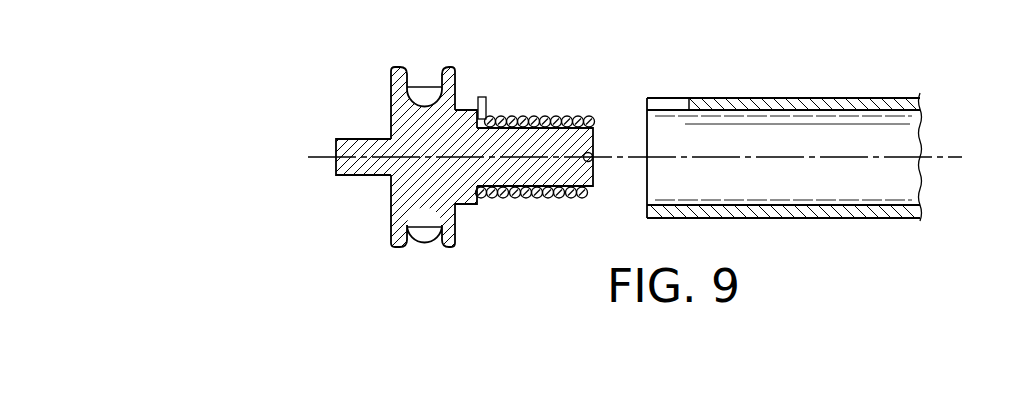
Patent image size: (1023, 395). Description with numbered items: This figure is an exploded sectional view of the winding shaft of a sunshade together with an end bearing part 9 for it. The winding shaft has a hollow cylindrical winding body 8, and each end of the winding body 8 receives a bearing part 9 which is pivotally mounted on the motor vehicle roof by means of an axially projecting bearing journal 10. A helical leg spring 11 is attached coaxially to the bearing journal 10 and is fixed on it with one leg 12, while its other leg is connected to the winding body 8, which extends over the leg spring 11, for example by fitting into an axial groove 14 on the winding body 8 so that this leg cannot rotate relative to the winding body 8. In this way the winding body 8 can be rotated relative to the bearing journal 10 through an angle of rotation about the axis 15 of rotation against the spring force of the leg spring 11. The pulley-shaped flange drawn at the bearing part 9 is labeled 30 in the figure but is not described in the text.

The winding body 8 is at (813, 100).
The bearing part 9 is at (467, 138).
The bearing journal 10 is at (353, 143).
The helical leg spring 11 is at (538, 108).
The leg 12 is at (592, 157).
The axial groove 14 is at (665, 104).
The axis of rotation 15 is at (947, 157).
The pulley 30 is at (400, 106).